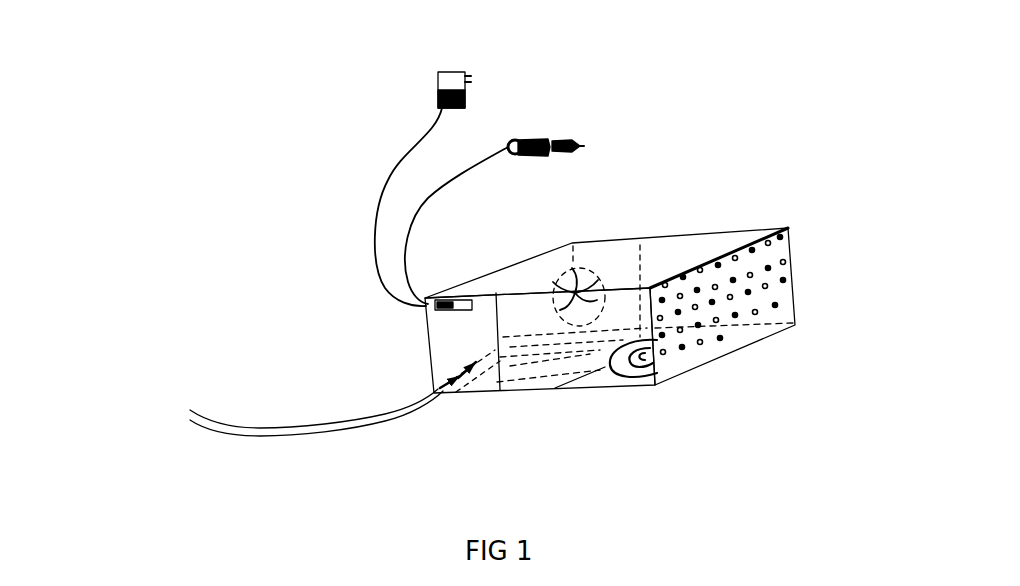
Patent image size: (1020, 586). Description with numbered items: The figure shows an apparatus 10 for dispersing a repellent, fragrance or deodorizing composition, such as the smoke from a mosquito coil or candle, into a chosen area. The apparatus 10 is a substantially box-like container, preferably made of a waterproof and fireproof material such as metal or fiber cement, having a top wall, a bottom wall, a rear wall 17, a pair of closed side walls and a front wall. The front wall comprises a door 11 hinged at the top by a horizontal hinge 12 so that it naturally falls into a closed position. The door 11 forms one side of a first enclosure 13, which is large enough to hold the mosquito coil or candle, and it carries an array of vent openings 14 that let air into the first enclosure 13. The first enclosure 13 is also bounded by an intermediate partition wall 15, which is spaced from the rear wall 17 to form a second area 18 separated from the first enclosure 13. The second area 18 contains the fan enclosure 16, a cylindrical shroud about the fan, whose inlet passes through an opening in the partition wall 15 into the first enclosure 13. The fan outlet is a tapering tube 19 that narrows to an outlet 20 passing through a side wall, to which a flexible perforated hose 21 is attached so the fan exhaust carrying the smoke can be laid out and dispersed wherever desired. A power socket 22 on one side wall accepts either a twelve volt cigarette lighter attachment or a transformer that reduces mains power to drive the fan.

The apparatus 10 is at (733, 143).
The door 11 is at (712, 297).
The horizontal hinge 12 is at (768, 235).
The first enclosure 13 is at (612, 263).
The vent openings 14 is at (782, 288).
The intermediate partition wall 15 is at (540, 357).
The fan enclosure 16 is at (533, 265).
The rear wall 17 is at (453, 273).
The second area 18 is at (493, 277).
The tapering tube 19 is at (497, 340).
The outlet 20 is at (445, 385).
The flexible perforated hose 21 is at (230, 428).
The power socket 22 is at (455, 311).